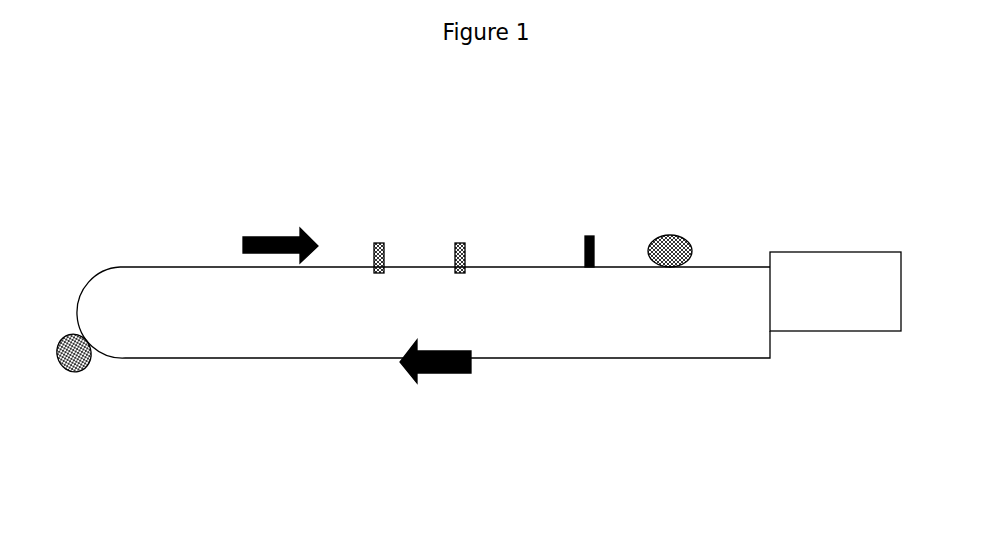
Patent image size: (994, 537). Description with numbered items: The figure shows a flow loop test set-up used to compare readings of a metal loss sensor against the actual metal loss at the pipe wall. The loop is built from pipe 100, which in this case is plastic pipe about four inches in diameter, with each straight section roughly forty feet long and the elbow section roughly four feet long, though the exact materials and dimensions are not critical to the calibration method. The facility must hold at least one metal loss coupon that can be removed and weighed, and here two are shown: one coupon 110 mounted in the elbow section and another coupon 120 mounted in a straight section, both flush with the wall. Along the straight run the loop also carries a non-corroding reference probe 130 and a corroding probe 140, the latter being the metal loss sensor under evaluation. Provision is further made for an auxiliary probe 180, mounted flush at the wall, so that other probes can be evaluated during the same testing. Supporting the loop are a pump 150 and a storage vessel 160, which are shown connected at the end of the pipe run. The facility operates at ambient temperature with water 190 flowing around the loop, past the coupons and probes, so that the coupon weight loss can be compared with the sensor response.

The pipe 100 is at (293, 364).
The elbow section coupon 110 is at (58, 379).
The straight section coupon 120 is at (676, 239).
The reference probe 130 is at (382, 229).
The corroding probe 140 is at (464, 237).
The pump 150 is at (835, 291).
The storage vessel 160 is at (835, 291).
The auxiliary probe 180 is at (592, 271).
The water 190 is at (264, 301).